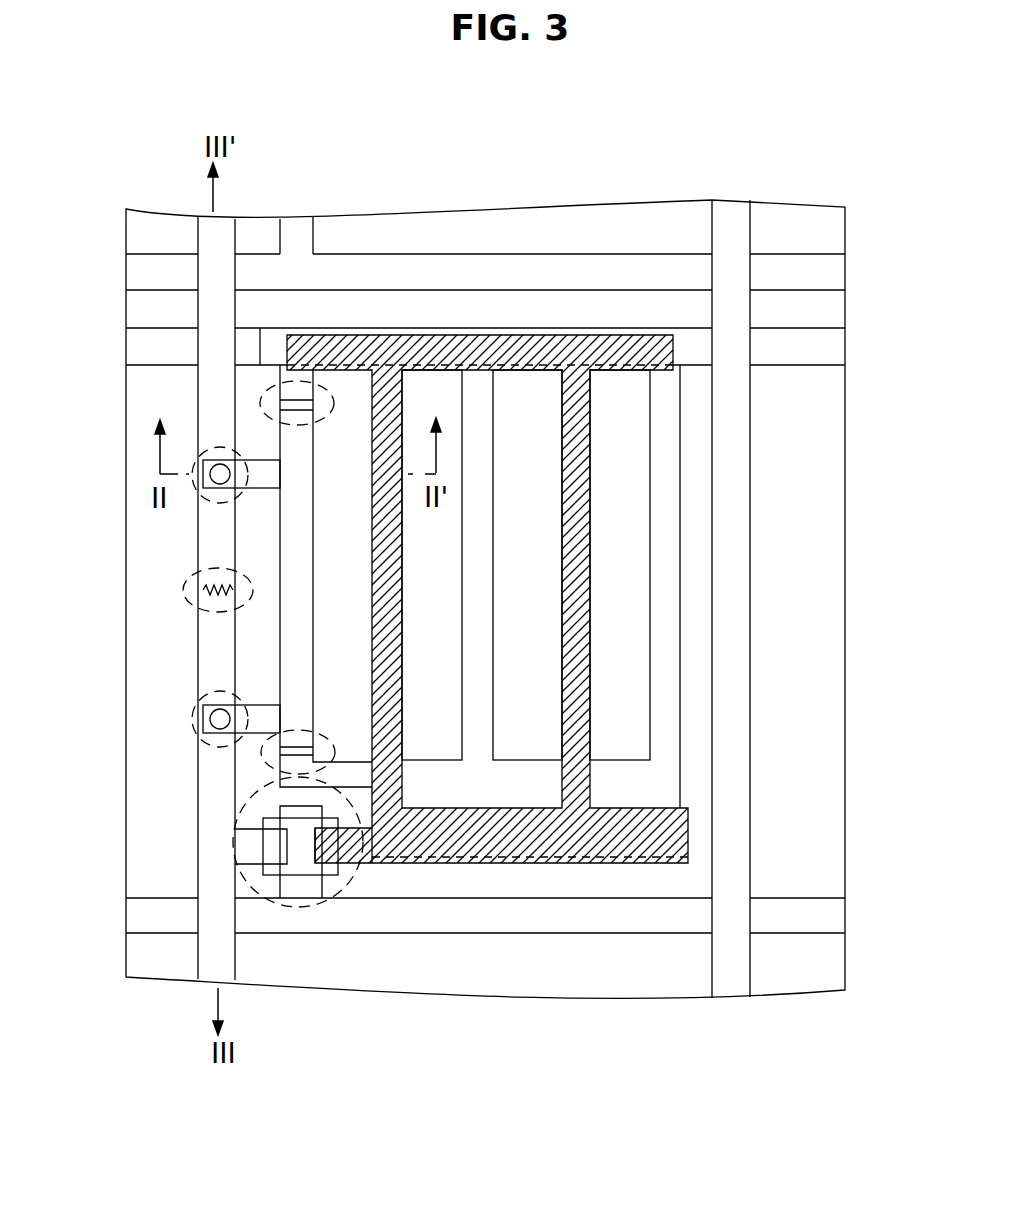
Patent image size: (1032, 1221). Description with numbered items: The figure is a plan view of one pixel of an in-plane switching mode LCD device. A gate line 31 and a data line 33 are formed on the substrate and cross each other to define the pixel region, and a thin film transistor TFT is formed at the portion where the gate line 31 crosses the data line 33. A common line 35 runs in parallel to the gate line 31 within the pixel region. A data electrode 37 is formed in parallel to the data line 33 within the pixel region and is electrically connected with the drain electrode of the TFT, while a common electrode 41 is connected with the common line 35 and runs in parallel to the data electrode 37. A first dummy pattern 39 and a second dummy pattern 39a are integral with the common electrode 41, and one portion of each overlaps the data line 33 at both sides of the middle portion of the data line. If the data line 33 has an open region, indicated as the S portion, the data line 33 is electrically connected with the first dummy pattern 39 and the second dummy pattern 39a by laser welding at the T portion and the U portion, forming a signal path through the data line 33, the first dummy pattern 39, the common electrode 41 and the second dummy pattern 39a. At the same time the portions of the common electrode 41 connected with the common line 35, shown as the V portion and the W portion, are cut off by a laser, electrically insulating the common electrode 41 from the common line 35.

The gate line 31 is at (813, 273).
The data line 33 is at (227, 960).
The common line 35 is at (813, 343).
The data electrode 37 is at (573, 436).
The first dummy pattern 39 is at (258, 480).
The second dummy pattern 39a is at (258, 712).
The common electrode 41 is at (287, 562).
The V portion V is at (262, 395).
The T portion T is at (218, 447).
The S portion S is at (200, 605).
The U portion U is at (192, 718).
The W portion W is at (268, 760).
The thin film transistor TFT is at (322, 842).